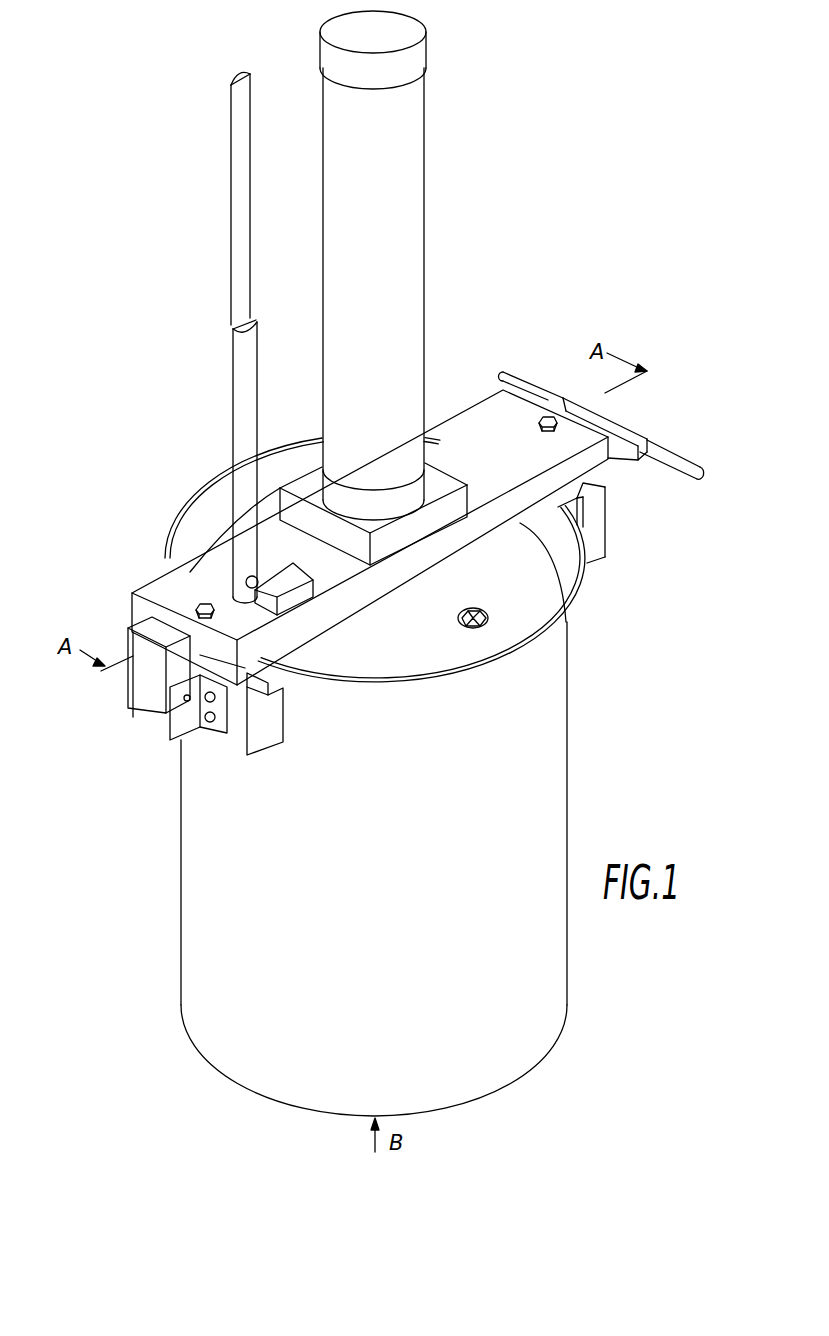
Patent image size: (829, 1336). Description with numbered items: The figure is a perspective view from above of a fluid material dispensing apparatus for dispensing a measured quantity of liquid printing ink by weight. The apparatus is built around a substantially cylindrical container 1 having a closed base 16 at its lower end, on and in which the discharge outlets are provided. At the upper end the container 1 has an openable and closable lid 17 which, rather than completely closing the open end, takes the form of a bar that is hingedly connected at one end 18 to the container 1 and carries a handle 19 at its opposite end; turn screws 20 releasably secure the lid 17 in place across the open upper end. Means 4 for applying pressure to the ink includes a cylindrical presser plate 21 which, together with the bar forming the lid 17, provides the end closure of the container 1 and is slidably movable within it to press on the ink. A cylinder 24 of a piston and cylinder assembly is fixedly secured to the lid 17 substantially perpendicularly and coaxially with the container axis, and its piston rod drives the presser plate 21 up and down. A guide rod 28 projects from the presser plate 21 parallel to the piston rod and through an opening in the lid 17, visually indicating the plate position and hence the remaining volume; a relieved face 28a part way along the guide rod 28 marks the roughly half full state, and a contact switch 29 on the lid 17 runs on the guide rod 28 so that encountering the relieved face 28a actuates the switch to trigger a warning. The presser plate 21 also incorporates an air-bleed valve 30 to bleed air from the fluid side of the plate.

The container 1 is at (548, 745).
The means for applying pressure 4 is at (431, 254).
The closed base 16 is at (545, 1055).
The lid 17 is at (483, 425).
The hinged connection 18 is at (153, 693).
The handle 19 is at (660, 448).
The turn screws 20 is at (197, 603).
The presser plate 21 is at (218, 540).
The cylinder 24 is at (417, 158).
The guide rod 28 is at (242, 367).
The relieved face 28a is at (243, 230).
The contact switch 29 is at (297, 597).
The air-bleed valve 30 is at (490, 616).